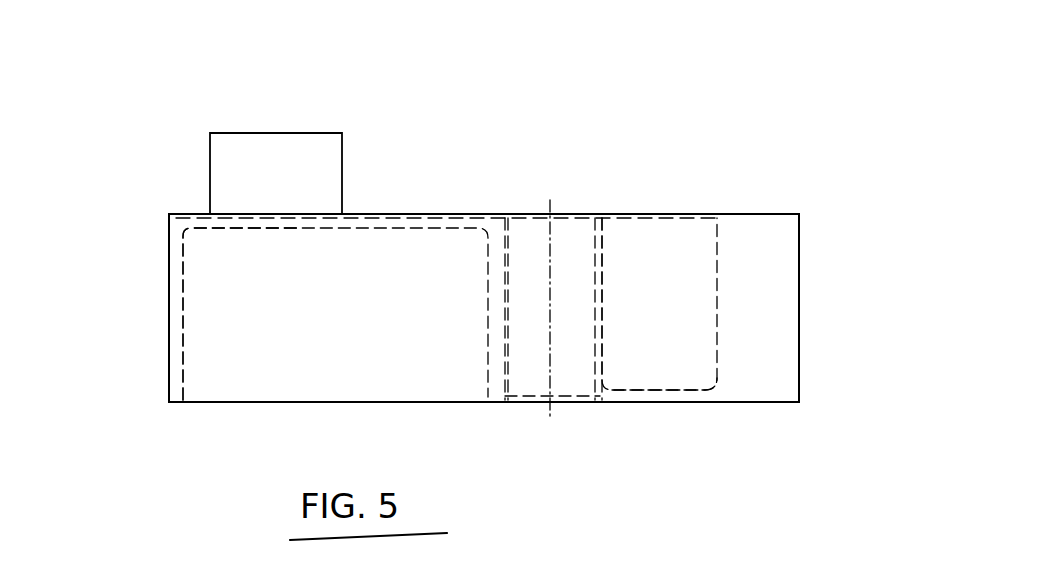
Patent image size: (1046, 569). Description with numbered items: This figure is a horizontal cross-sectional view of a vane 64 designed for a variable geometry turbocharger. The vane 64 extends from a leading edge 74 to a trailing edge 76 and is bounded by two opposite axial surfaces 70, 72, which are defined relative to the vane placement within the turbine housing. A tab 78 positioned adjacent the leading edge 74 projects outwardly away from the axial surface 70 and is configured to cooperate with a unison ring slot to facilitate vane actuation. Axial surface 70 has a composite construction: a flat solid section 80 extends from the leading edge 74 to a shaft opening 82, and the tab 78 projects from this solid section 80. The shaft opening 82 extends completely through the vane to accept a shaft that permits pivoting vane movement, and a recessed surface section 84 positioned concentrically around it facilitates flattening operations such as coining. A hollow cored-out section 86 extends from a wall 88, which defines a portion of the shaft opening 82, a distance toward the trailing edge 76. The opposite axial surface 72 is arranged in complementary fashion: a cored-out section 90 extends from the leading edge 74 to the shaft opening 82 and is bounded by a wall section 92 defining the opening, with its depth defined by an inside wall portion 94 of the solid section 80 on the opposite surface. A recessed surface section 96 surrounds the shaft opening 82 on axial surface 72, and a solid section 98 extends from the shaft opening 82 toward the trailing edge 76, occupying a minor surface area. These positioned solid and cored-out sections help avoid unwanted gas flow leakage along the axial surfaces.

The vane 64 is at (630, 190).
The axial surface 70 is at (483, 213).
The axial surface 72 is at (465, 407).
The leading edge 74 is at (167, 317).
The trailing edge 76 is at (799, 307).
The tab 78 is at (270, 147).
The solid section 80 is at (393, 217).
The shaft opening 82 is at (568, 365).
The recessed surface section 84 is at (562, 217).
The cored-out section 86 is at (662, 243).
The wall 88 is at (598, 303).
The cored-out section 90 is at (300, 357).
The wall section 92 is at (490, 308).
The inside wall portion 94 is at (242, 232).
The recessed surface section 96 is at (530, 403).
The solid section 98 is at (660, 397).